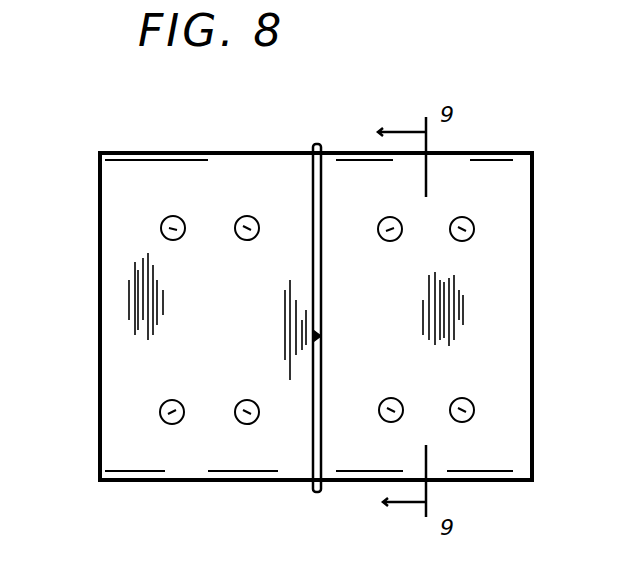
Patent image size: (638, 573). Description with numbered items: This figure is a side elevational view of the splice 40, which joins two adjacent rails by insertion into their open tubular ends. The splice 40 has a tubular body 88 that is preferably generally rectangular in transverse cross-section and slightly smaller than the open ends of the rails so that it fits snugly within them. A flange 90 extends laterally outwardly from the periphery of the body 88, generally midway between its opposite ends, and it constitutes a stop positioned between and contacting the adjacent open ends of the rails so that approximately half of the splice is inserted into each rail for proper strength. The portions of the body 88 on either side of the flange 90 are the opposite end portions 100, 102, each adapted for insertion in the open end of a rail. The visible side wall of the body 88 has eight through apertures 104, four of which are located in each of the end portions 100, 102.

The end portion 100 is at (522, 483).
The end portion 102 is at (100, 182).
The tubular body 88 is at (232, 480).
The flange 90 is at (315, 492).
The splice 40 is at (130, 480).
The through apertures 104 is at (175, 240).